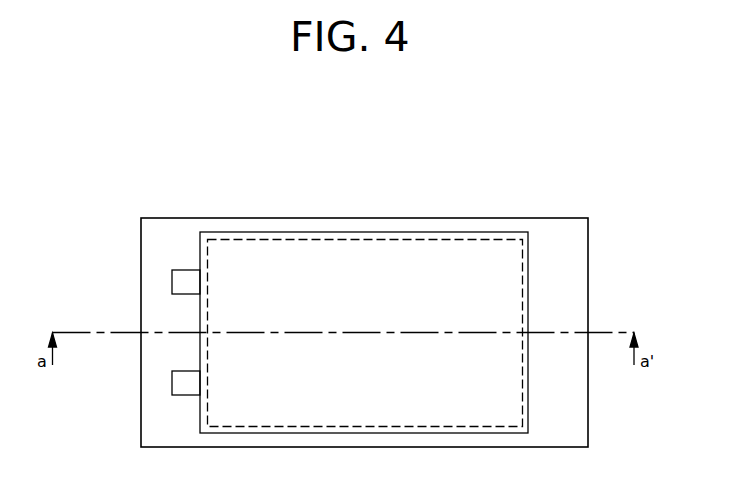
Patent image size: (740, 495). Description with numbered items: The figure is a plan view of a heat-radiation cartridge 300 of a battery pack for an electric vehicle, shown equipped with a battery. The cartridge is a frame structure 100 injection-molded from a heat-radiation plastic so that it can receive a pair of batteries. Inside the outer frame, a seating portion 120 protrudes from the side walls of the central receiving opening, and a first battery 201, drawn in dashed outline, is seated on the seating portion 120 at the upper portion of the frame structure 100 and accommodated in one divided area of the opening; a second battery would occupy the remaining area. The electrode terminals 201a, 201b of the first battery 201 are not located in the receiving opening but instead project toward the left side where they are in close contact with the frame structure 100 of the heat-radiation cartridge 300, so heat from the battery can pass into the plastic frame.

The frame structure 100 is at (564, 268).
The heat-radiation cartridge 300 is at (574, 198).
The seating portion 120 is at (355, 236).
The first battery 201 is at (399, 264).
The electrode terminal 201a is at (180, 285).
The electrode terminal 201b is at (180, 384).